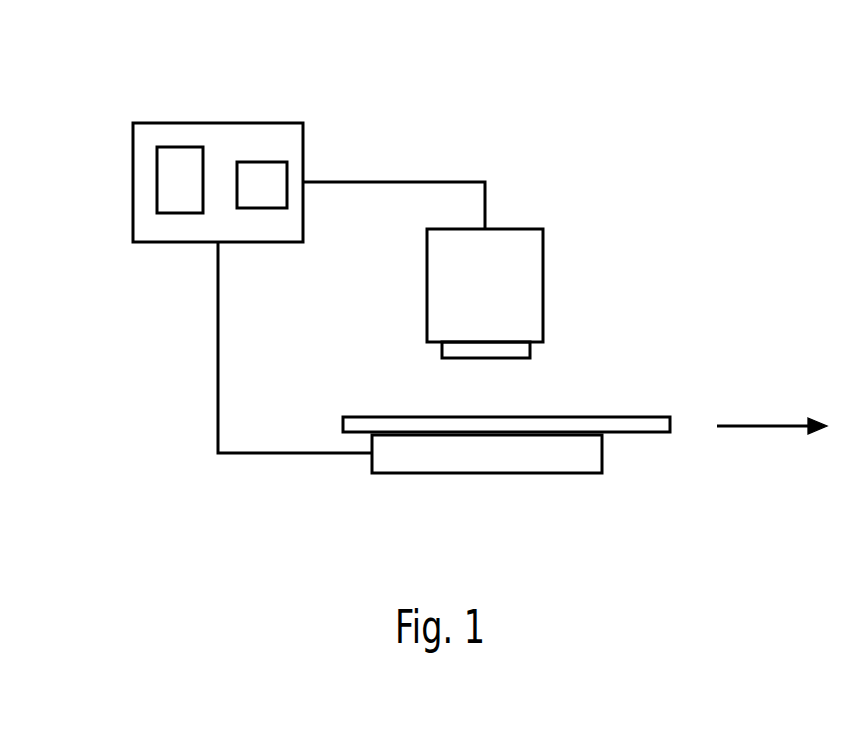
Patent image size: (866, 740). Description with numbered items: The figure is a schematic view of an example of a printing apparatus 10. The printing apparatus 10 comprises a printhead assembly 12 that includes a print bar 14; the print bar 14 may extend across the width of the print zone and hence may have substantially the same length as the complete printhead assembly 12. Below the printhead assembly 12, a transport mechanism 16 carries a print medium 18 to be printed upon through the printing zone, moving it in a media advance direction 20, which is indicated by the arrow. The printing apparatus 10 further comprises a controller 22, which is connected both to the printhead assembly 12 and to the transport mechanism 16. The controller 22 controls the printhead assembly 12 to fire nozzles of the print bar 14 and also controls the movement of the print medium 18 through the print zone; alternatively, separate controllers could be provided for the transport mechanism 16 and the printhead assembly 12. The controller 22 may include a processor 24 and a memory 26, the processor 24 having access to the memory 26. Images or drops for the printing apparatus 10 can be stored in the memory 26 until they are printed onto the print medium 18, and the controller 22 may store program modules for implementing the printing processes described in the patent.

The printing apparatus 10 is at (613, 192).
The printhead assembly 12 is at (544, 287).
The print bar 14 is at (531, 353).
The transport mechanism 16 is at (483, 474).
The print medium 18 is at (378, 416).
The media advance direction 20 is at (775, 423).
The controller 22 is at (221, 123).
The processor 24 is at (157, 182).
The memory 26 is at (261, 163).